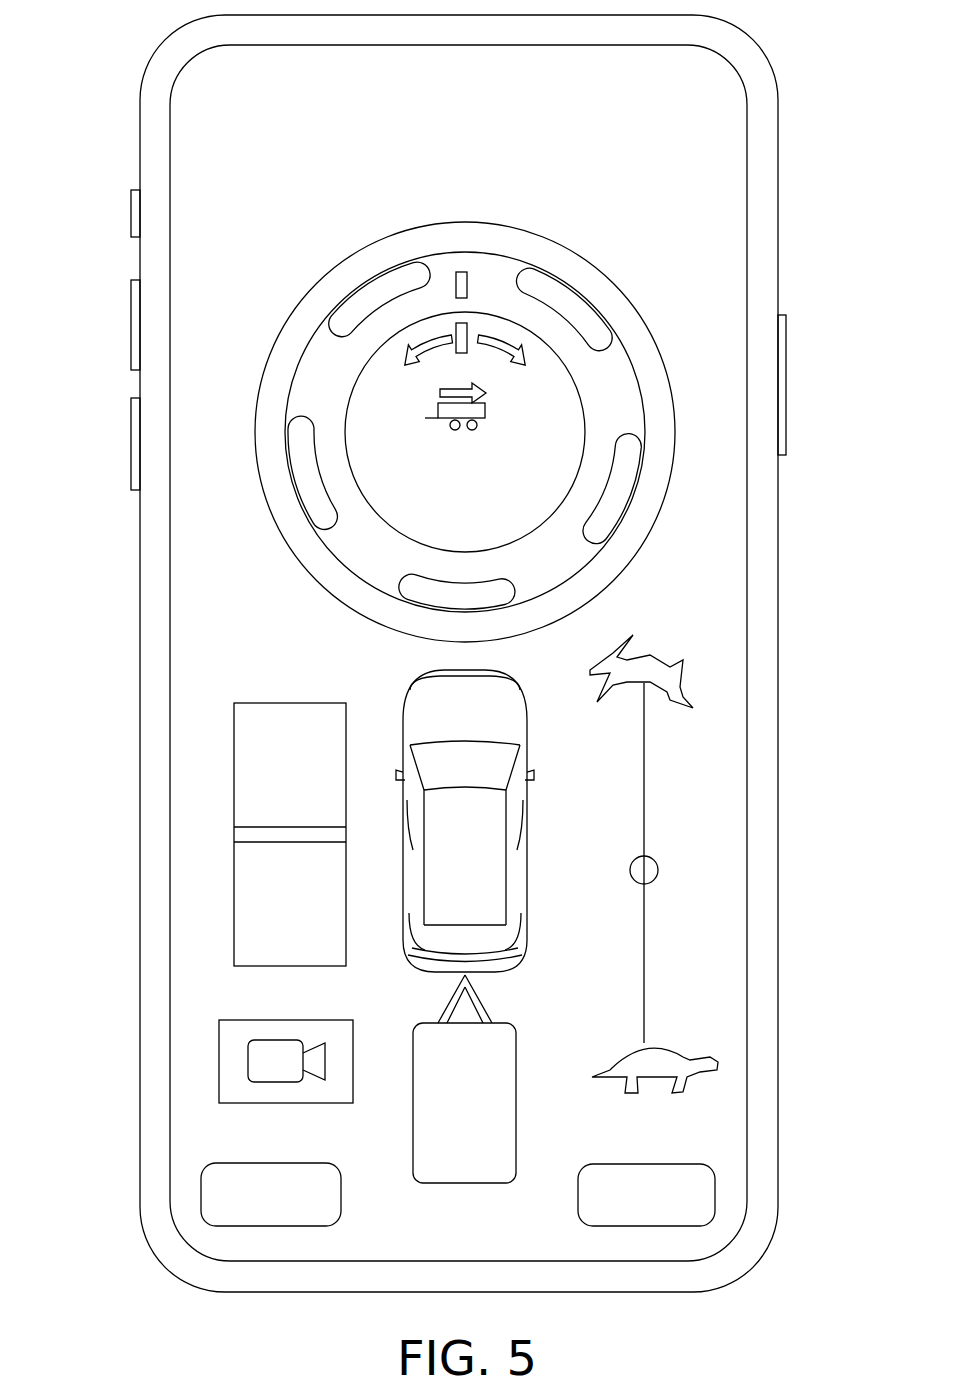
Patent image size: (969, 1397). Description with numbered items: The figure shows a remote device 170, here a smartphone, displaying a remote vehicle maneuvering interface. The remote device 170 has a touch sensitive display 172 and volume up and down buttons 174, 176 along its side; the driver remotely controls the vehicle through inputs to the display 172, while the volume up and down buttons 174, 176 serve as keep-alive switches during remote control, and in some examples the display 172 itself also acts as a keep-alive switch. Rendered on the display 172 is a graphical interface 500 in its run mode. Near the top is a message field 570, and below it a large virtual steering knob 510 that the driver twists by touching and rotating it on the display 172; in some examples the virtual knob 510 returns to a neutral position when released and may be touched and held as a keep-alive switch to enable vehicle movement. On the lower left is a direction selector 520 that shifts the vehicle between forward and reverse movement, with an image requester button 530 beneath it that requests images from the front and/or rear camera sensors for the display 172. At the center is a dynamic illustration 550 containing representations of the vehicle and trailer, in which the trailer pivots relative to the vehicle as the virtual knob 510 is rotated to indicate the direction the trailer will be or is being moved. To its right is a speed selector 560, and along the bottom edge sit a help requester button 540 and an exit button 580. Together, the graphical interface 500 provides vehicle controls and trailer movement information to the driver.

The remote device 170 is at (112, 62).
The touch sensitive display 172 is at (200, 157).
The volume up button 174 is at (131, 323).
The volume down button 176 is at (131, 443).
The graphical interface 500 is at (230, 215).
The virtual steering knob 510 is at (615, 397).
The direction selector 520 is at (256, 775).
The image requester button 530 is at (236, 1065).
The help requester button 540 is at (225, 1195).
The dynamic illustration 550 is at (443, 710).
The speed selector 560 is at (644, 870).
The message field 570 is at (676, 97).
The exit button 580 is at (692, 1195).